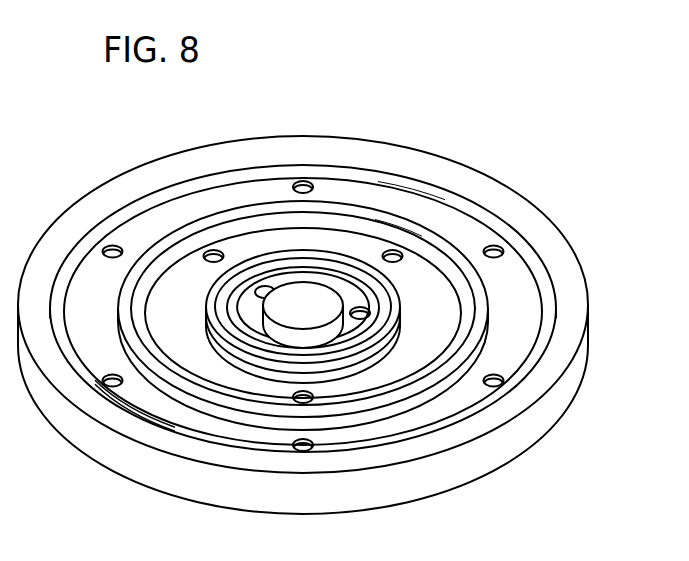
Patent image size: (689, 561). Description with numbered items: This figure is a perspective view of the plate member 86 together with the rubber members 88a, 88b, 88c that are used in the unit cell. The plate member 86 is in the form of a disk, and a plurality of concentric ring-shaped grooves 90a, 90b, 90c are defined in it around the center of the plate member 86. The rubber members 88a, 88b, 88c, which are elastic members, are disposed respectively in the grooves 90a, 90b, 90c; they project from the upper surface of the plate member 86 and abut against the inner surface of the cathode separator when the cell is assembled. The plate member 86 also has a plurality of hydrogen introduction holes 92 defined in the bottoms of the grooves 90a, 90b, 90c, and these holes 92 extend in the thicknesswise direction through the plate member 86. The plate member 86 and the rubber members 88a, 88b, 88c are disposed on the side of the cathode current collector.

The plate member 86 is at (586, 266).
The rubber member 88a is at (358, 267).
The rubber member 88b is at (427, 247).
The rubber member 88c is at (512, 235).
The ring-shaped groove 90a is at (250, 297).
The ring-shaped groove 90b is at (208, 271).
The ring-shaped groove 90c is at (133, 385).
The hydrogen introduction hole 92 is at (118, 246).